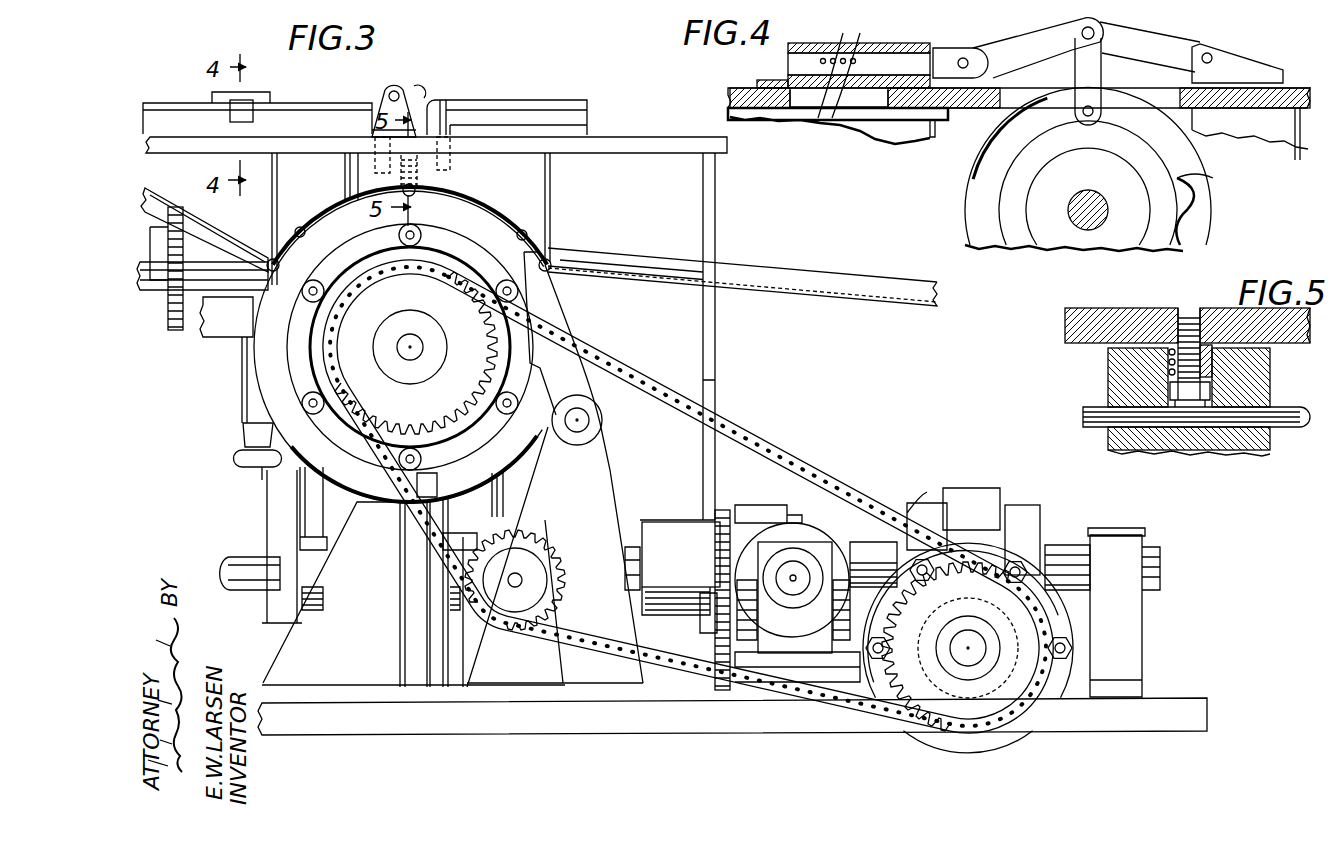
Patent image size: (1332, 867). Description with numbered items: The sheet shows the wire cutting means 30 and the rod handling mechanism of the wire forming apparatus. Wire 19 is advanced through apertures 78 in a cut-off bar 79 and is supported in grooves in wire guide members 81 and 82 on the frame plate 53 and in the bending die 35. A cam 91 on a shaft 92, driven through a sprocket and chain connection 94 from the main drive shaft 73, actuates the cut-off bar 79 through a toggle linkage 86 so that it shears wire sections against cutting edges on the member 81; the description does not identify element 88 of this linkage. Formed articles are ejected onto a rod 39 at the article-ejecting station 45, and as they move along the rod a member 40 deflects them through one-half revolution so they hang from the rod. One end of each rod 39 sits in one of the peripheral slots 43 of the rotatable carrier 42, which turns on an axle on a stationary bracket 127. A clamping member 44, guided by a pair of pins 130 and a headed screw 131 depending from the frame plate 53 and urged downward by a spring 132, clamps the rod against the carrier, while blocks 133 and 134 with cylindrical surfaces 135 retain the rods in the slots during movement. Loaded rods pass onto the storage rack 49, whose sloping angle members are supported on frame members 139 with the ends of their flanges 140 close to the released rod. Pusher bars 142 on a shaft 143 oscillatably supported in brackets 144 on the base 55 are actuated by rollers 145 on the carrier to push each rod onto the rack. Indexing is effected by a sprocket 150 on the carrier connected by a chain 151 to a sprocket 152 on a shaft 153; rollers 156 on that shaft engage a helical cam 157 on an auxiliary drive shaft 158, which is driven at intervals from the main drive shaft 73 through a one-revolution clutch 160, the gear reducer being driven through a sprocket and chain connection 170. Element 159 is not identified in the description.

In FIG. 3, the wire cutting means 30 is at (216, 100).
In FIG. 4, the wire cutting means 30 is at (786, 66).
In FIG. 3, the cut-off bar 79 is at (242, 112).
In FIG. 4, the cut-off bar 79 is at (905, 62).
In FIG. 3, the wire guide member 81 is at (339, 103).
In FIG. 3, the deflecting member 40 is at (418, 86).
In FIG. 3, the bending die 35 is at (433, 106).
In FIG. 3, the wire guide member 82 is at (553, 100).
In FIG. 3, the frame plate 53 is at (664, 144).
In FIG. 4, the frame plate 53 is at (1257, 108).
In FIG. 5, the frame plate 53 is at (1105, 338).
In FIG. 3, the headed screw 131 is at (375, 147).
In FIG. 5, the headed screw 131 is at (1181, 322).
In FIG. 3, the spring 132 is at (449, 150).
In FIG. 5, the spring 132 is at (1212, 364).
In FIG. 3, the pins 130 is at (400, 165).
In FIG. 3, the rod 39 is at (415, 193).
In FIG. 5, the rod 39 is at (1108, 424).
In FIG. 3, the article-ejecting station 45 is at (376, 200).
In FIG. 3, the clamping member 44 is at (455, 203).
In FIG. 5, the clamping member 44 is at (1120, 376).
In FIG. 3, the block 133 is at (290, 206).
In FIG. 3, the block 134 is at (538, 206).
In FIG. 3, the cylindrical surfaces 135 is at (296, 232).
In FIG. 3, the rotatable carrier 42 is at (181, 194).
In FIG. 5, the rotatable carrier 42 is at (1195, 445).
In FIG. 3, the sprocket and chain connection 94 is at (174, 320).
In FIG. 3, the main drive shaft 73 is at (243, 557).
In FIG. 3, the peripheral slots 43 is at (246, 428).
In FIG. 3, the stationary bracket 127 is at (374, 665).
In FIG. 3, the base 55 is at (705, 720).
In FIG. 3, the pusher bars 142 is at (540, 312).
In FIG. 3, the brackets 144 is at (596, 470).
In FIG. 3, the shaft 143 is at (590, 420).
In FIG. 3, the rollers 145 is at (432, 242).
In FIG. 3, the sprocket 150 is at (352, 346).
In FIG. 3, the flanges 140 is at (586, 265).
In FIG. 3, the storage rack 49 is at (668, 276).
In FIG. 3, the frame members 139 is at (716, 336).
In FIG. 3, the sprocket and chain connection 170 is at (715, 556).
In FIG. 3, the one-revolution clutch 160 is at (757, 504).
In FIG. 3, the motor housing 159 is at (790, 644).
In FIG. 3, the auxiliary drive shaft 158 is at (860, 557).
In FIG. 3, the helical cam 157 is at (985, 480).
In FIG. 3, the sprocket 152 is at (867, 660).
In FIG. 3, the rollers 156 is at (1018, 555).
In FIG. 3, the shaft 153 is at (968, 640).
In FIG. 3, the chain 151 is at (819, 470).
In FIG. 4, the apertures 78 is at (836, 58).
In FIG. 4, the wire 19 is at (834, 87).
In FIG. 4, the toggle linkage 86 is at (1003, 50).
In FIG. 4, the pivot pad 88 is at (1213, 56).
In FIG. 4, the cam 91 is at (1206, 180).
In FIG. 4, the shaft 92 is at (1088, 230).